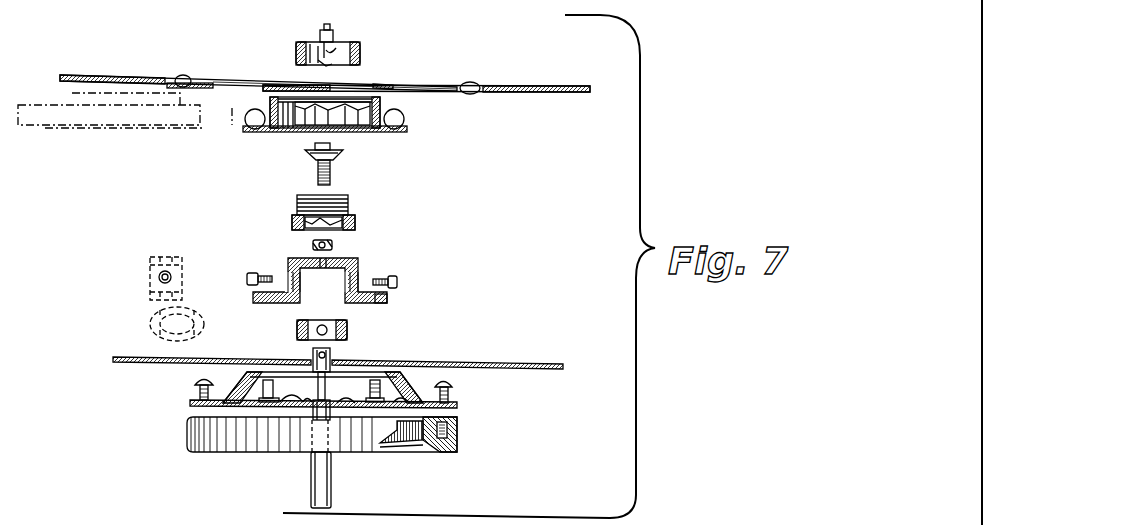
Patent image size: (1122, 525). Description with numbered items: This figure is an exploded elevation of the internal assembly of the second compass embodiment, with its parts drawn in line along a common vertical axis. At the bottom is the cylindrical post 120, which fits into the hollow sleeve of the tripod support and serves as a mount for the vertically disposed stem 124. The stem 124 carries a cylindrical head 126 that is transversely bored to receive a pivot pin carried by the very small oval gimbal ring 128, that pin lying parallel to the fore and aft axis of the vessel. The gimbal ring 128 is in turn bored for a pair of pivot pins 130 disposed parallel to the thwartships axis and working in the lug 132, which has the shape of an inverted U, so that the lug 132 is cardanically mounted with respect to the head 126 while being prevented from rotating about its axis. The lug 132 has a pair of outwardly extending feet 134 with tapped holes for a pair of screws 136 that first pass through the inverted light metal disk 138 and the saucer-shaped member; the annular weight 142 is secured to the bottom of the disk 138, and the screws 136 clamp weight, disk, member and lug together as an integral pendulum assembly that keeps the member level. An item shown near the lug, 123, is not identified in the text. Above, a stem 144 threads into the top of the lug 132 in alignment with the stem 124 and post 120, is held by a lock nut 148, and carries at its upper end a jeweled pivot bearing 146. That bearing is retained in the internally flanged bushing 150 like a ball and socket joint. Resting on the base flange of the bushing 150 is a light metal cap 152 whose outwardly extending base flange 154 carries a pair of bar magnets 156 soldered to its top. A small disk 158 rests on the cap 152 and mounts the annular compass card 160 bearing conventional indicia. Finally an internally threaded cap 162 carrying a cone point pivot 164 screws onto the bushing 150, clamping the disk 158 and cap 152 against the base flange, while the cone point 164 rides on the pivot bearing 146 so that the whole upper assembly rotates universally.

The cylindrical post 120 is at (312, 477).
The oval washer 123 is at (152, 320).
The stem 124 is at (314, 390).
The cylindrical head 126 is at (313, 352).
The oval gimbal ring 128 is at (348, 328).
The pivot pins 130 is at (410, 280).
The lug 132 is at (150, 270).
The feet 134 is at (388, 298).
The screws 136 is at (370, 389).
The inverted light metal disk 138 is at (457, 406).
The annular weight 142 is at (458, 444).
The stem 144 is at (328, 160).
The jeweled pivot bearing 146 is at (318, 158).
The lock nut 148 is at (313, 245).
The internally flanged bushing 150 is at (297, 222).
The light metal cap 152 is at (385, 100).
The base flange 154 is at (407, 131).
The bar magnets 156 is at (404, 118).
The small disk 158 is at (375, 86).
The annular compass card 160 is at (508, 86).
The internally threaded cap 162 is at (334, 32).
The cone point pivot 164 is at (322, 66).